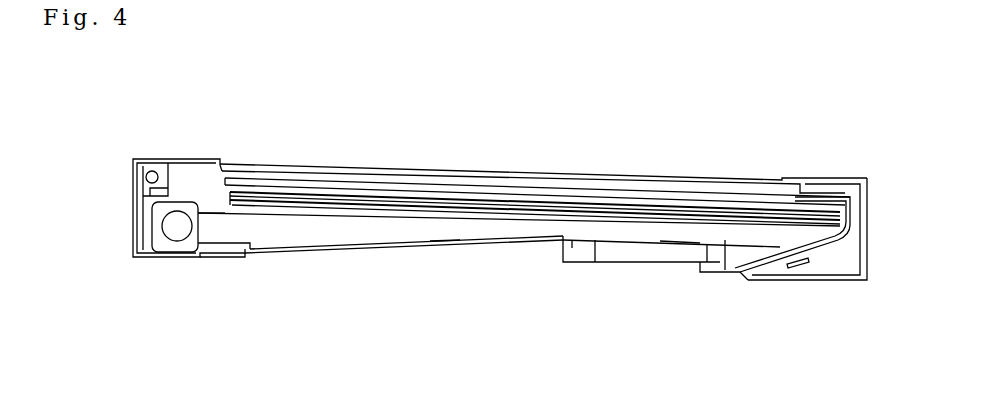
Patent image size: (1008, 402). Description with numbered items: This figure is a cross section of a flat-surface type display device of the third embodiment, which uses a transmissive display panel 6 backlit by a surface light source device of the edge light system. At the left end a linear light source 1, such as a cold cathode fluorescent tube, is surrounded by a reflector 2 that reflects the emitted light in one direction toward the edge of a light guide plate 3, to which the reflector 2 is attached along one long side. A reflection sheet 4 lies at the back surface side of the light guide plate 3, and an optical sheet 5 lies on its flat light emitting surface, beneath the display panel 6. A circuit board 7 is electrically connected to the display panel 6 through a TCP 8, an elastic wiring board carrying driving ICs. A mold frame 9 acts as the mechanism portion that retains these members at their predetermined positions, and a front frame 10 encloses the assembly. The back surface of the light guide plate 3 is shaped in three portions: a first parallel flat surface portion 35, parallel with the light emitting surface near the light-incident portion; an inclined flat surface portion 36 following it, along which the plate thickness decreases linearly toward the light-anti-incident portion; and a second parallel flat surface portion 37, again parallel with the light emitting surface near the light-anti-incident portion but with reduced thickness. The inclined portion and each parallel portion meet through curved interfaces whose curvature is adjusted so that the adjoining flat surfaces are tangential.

The linear light source 1 is at (177, 226).
The reflector 2 is at (177, 258).
The light guide plate 3 is at (288, 247).
The reflection sheet 4 is at (377, 248).
The optical sheet 5 is at (283, 195).
The transmissive display panel 6 is at (382, 168).
The circuit board 7 is at (632, 263).
The TCP 8 is at (773, 267).
The mold frame 9 is at (727, 252).
The front frame 10 is at (155, 162).
The first parallel flat surface portion 35 is at (245, 258).
The inclined flat surface portion 36 is at (443, 248).
The second parallel flat surface portion 37 is at (680, 242).